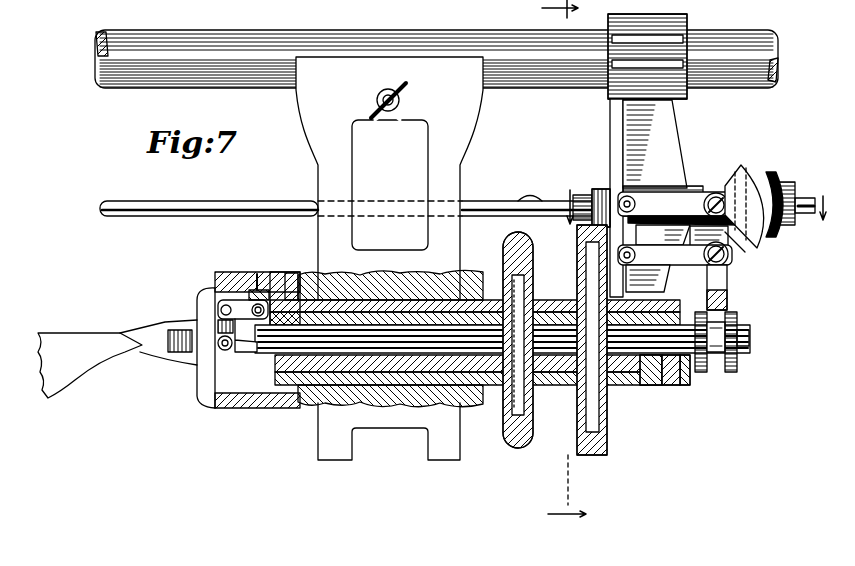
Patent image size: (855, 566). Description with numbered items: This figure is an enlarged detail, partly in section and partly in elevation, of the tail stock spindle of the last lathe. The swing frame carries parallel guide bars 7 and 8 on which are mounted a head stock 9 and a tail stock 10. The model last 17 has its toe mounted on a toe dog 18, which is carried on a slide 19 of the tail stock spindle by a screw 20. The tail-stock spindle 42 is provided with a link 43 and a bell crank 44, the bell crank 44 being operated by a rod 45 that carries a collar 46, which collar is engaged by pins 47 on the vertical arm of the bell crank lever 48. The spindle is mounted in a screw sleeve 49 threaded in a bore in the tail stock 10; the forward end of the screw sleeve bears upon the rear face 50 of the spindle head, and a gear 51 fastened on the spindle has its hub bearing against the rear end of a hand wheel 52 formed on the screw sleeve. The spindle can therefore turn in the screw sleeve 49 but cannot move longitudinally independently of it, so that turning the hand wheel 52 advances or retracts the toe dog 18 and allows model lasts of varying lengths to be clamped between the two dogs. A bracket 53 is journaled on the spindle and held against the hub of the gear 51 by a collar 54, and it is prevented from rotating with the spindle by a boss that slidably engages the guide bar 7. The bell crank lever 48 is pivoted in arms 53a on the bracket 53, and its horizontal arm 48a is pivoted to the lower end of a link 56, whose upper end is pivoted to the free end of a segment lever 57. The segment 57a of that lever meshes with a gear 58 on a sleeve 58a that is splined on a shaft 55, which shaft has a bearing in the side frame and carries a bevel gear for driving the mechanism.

The guide bar 7 is at (120, 45).
The guide bar 8 is at (566, 278).
The head stock 9 is at (692, 209).
The tail stock 10 is at (468, 120).
The model last 17 is at (72, 336).
The toe dog 18 is at (150, 335).
The slide 19 is at (205, 394).
The screw 20 is at (182, 356).
The tail-stock spindle 42 is at (495, 365).
The link 43 is at (218, 326).
The bell crank 44 is at (238, 302).
The rod 45 is at (645, 345).
The collar 46 is at (702, 374).
The pins 47 is at (722, 362).
The bell crank lever 48 is at (725, 283).
The horizontal arm 48a is at (680, 262).
The screw sleeve 49 is at (300, 395).
The rear face 50 is at (296, 290).
The gear 51 is at (590, 457).
The hand wheel 52 is at (516, 445).
The bracket 53 is at (662, 148).
The arms 53a is at (730, 238).
The collar 54 is at (672, 388).
The shaft 55 is at (475, 206).
The link 56 is at (663, 235).
The segment lever 57 is at (690, 192).
The segment 57a is at (755, 188).
The gear 58 is at (790, 180).
The sleeve 58a is at (596, 195).